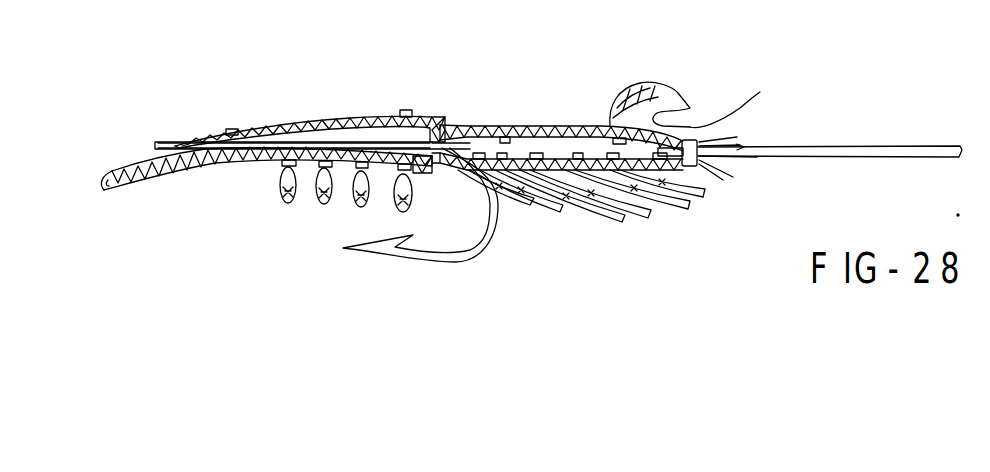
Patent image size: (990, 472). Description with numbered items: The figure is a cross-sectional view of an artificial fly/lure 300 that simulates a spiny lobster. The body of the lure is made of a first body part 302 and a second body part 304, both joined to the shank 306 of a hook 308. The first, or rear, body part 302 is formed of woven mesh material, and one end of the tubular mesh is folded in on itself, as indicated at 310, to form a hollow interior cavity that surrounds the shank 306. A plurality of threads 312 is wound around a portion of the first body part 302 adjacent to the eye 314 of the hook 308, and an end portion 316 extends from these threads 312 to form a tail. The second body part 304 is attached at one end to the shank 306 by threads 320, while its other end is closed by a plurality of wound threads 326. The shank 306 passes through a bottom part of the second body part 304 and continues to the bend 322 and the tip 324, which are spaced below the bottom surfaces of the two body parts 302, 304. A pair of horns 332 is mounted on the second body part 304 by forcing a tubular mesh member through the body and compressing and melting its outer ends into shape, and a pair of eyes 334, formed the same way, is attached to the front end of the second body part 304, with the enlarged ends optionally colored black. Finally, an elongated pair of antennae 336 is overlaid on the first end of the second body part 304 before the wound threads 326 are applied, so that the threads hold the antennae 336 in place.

The artificial fly/lure 300 is at (662, 45).
The first body part 302 is at (330, 118).
The second body part 304 is at (580, 90).
The shank 306 is at (265, 140).
The hook 308 is at (459, 145).
The folded-in end of tubular mesh 310 is at (357, 133).
The threads 312 is at (236, 165).
The eye 314 is at (170, 141).
The end portion 316 is at (116, 170).
The threads 320 is at (407, 130).
The bend 322 is at (497, 235).
The tip 324 is at (395, 238).
The wound threads 326 is at (702, 132).
The horns 332 is at (652, 88).
The eyes 334 is at (760, 92).
The antennae 336 is at (953, 118).